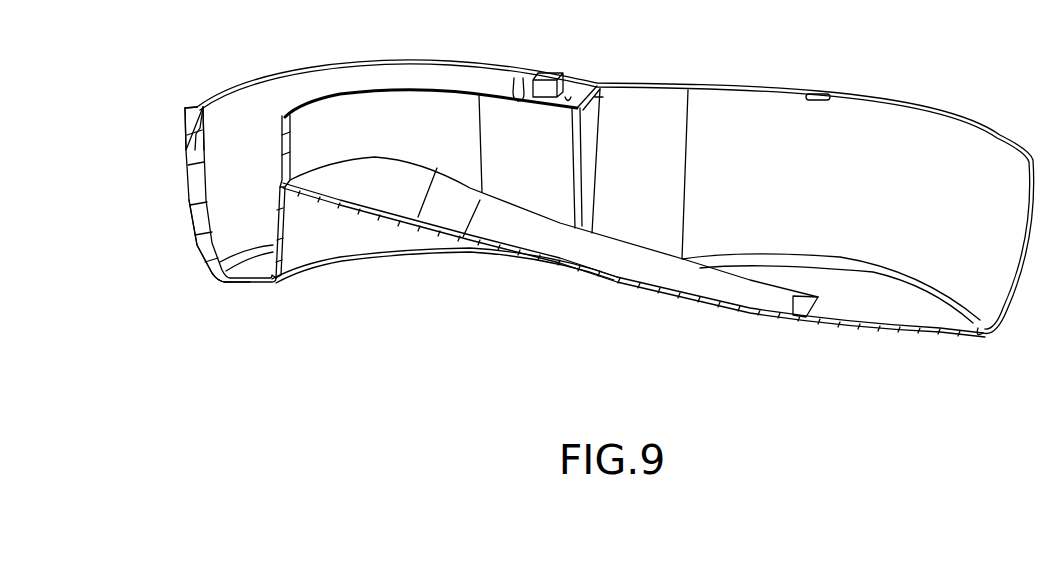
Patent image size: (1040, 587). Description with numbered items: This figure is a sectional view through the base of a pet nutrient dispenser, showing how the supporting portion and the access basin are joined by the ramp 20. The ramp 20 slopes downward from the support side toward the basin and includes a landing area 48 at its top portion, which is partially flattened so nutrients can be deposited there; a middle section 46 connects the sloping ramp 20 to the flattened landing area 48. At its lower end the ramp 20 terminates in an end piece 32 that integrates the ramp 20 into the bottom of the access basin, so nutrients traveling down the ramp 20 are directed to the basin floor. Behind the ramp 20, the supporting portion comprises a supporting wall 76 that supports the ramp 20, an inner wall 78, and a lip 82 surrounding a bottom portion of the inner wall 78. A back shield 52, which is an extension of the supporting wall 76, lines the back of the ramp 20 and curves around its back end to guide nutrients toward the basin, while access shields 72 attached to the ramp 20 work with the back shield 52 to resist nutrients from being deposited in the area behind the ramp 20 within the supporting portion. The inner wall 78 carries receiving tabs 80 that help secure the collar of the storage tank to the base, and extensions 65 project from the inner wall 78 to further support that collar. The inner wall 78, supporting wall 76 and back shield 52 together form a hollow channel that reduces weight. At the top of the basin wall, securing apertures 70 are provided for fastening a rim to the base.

The ramp 20 is at (618, 261).
The end piece 32 is at (802, 307).
The middle section 46 is at (446, 213).
The landing area 48 is at (371, 183).
The back shield 52 is at (410, 103).
The extensions 65 is at (197, 106).
The securing apertures 70 is at (820, 95).
The access shields 72 is at (601, 97).
The supporting wall 76 is at (298, 252).
The inner wall 78 is at (238, 233).
The receiving tabs 80 is at (550, 80).
The lip 82 is at (233, 268).